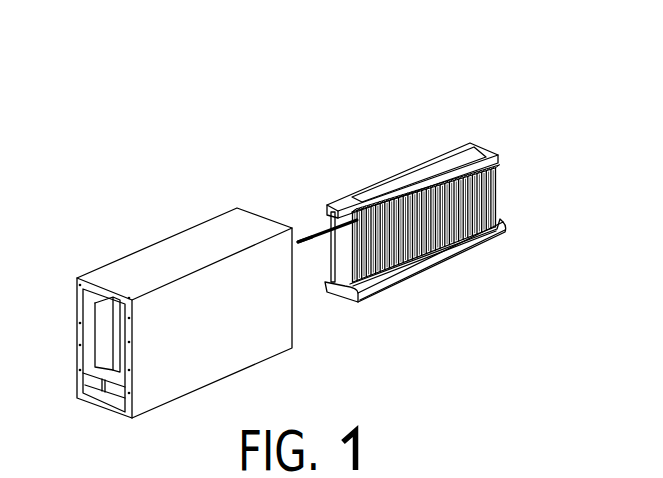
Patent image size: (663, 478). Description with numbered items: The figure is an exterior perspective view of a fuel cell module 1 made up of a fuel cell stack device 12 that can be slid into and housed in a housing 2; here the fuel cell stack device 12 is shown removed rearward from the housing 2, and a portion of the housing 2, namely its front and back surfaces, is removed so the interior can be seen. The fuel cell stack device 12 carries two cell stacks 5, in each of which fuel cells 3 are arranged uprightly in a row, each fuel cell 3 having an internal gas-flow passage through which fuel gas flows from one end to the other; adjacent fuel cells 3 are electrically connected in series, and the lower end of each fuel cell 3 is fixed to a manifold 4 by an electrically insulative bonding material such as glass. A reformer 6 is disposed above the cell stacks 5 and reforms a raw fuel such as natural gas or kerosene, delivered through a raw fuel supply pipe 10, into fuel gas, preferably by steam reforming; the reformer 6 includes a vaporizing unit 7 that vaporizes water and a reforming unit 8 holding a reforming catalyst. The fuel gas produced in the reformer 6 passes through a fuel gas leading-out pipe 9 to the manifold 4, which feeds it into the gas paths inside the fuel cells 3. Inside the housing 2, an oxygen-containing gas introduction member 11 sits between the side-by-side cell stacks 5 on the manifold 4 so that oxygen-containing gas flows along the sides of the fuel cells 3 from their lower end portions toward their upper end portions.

The fuel cell module 1 is at (148, 63).
The housing 2 is at (167, 277).
The fuel cells 3 is at (373, 290).
The manifold 4 is at (363, 297).
The cell stacks 5 is at (464, 289).
The reformer 6 is at (334, 207).
The vaporizing unit 7 is at (383, 208).
The reforming unit 8 is at (478, 152).
The fuel gas leading-out pipe 9 is at (330, 218).
The raw fuel supply pipe 10 is at (306, 230).
The oxygen-containing gas introduction member 11 is at (121, 316).
The fuel cell stack device 12 is at (438, 144).